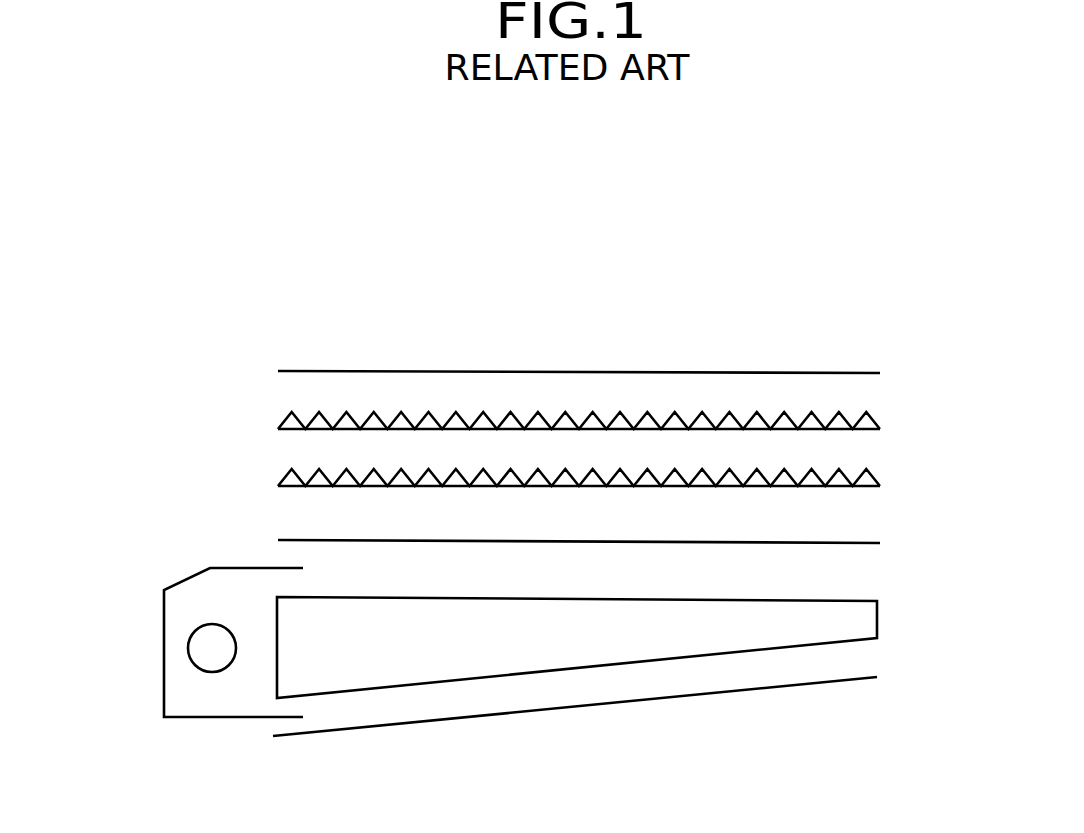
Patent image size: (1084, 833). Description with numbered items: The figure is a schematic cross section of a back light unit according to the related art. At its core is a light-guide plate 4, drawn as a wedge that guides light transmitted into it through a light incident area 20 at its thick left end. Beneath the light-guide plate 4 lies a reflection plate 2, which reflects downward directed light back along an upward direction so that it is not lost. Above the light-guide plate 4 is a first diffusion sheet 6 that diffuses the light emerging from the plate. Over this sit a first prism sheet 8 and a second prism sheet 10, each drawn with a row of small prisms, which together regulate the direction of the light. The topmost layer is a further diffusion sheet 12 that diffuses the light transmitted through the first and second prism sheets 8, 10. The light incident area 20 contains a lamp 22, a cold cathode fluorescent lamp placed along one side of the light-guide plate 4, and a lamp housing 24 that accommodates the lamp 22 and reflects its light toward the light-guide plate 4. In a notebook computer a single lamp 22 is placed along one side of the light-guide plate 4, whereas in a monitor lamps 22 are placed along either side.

The reflection plate 2 is at (877, 677).
The light-guide plate 4 is at (877, 614).
The first diffusion sheet 6 is at (880, 543).
The first prism sheet 8 is at (880, 486).
The second prism sheet 10 is at (880, 429).
The diffusion sheet 12 is at (880, 373).
The light incident area 20 is at (171, 647).
The lamp 22 is at (205, 661).
The lamp housing 24 is at (185, 580).